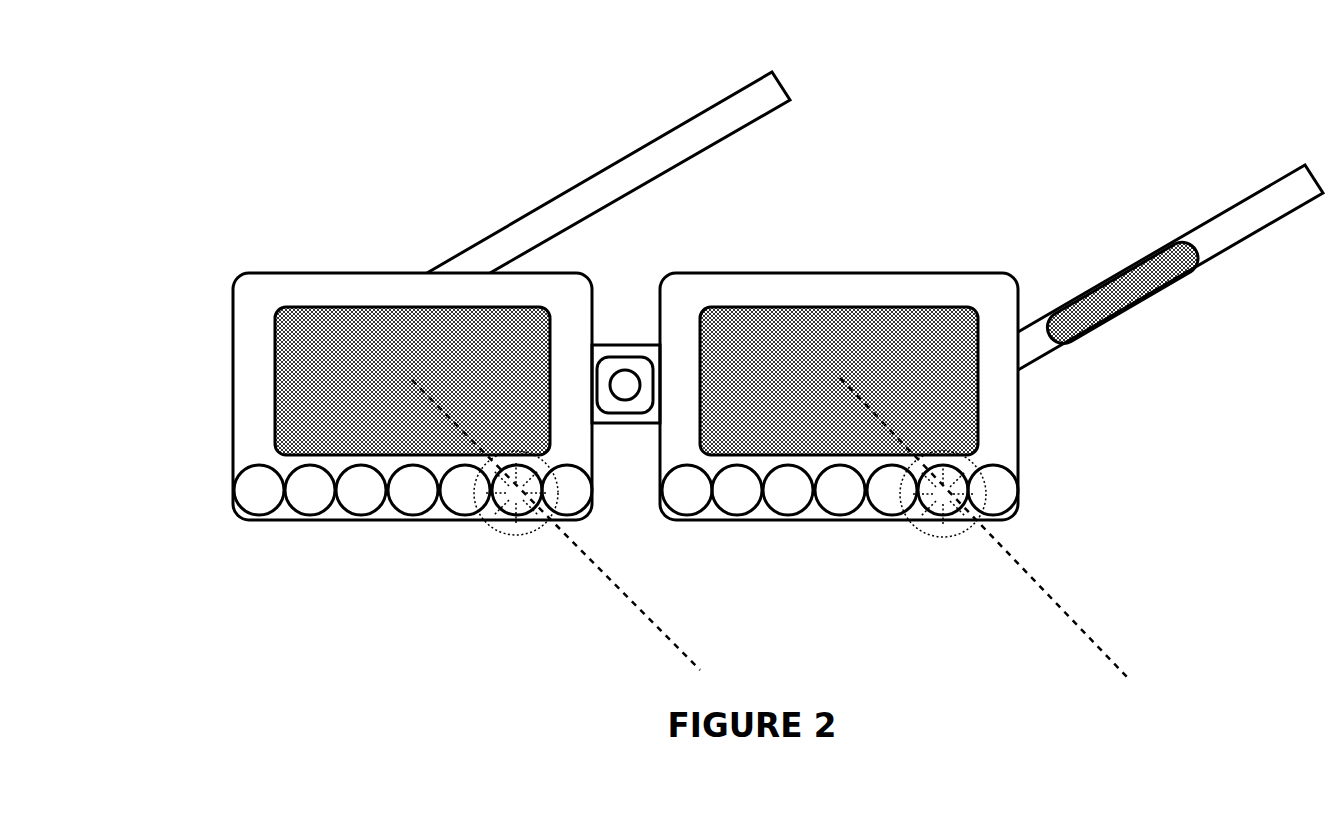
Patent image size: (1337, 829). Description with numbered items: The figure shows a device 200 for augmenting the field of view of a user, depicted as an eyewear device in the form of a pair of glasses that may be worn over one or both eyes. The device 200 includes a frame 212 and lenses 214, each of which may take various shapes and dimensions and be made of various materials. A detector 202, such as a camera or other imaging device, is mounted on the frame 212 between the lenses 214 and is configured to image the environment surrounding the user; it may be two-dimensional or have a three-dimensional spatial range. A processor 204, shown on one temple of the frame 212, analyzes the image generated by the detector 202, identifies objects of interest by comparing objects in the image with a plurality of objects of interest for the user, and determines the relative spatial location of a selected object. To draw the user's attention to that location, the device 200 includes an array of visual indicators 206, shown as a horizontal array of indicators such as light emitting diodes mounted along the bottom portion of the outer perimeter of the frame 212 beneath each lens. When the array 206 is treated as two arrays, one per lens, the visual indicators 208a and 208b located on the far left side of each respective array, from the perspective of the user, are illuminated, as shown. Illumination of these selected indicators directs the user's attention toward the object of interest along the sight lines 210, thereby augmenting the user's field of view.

The device 200 is at (240, 105).
The detector 202 is at (630, 345).
The processor 204 is at (1122, 266).
The array of visual indicators 206 is at (234, 478).
The visual indicator 208a is at (954, 536).
The visual indicator 208b is at (540, 530).
The sight lines 210 is at (1127, 677).
The frame 212 is at (272, 286).
The lenses 214 is at (766, 324).